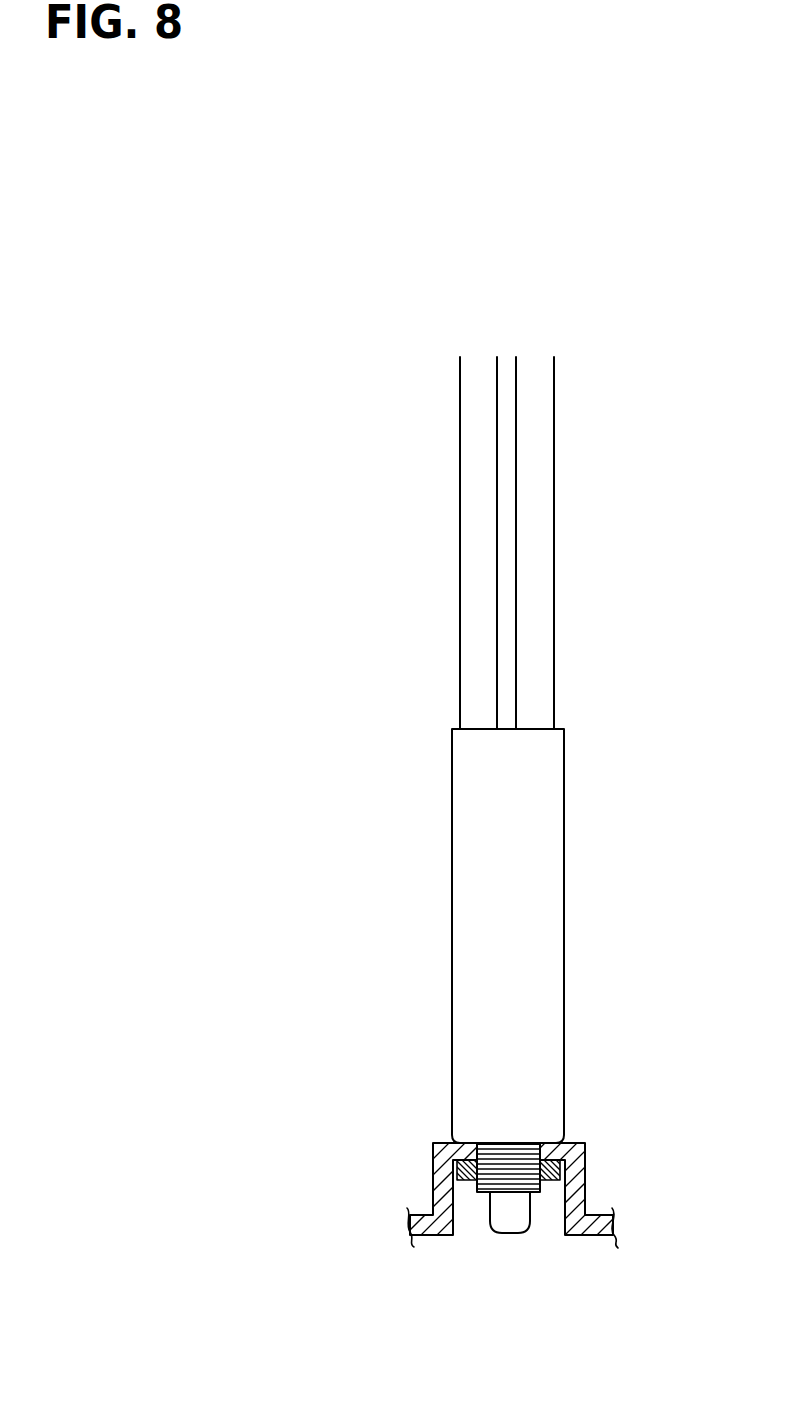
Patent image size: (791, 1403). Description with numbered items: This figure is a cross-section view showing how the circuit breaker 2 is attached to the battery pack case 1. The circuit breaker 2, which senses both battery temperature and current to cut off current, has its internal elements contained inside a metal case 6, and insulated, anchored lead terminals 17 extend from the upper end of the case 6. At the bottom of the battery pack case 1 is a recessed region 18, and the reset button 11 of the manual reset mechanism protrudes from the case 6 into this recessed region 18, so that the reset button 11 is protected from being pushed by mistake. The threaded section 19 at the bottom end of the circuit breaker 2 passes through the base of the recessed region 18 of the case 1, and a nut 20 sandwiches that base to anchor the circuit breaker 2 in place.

The battery pack case 1 is at (588, 1240).
The circuit breaker 2 is at (515, 750).
The metal case 6 is at (533, 958).
The reset button 11 is at (515, 1224).
The lead terminals 17 is at (475, 606).
The recessed region 18 is at (598, 1163).
The threaded section 19 is at (513, 1147).
The nut 20 is at (447, 1167).